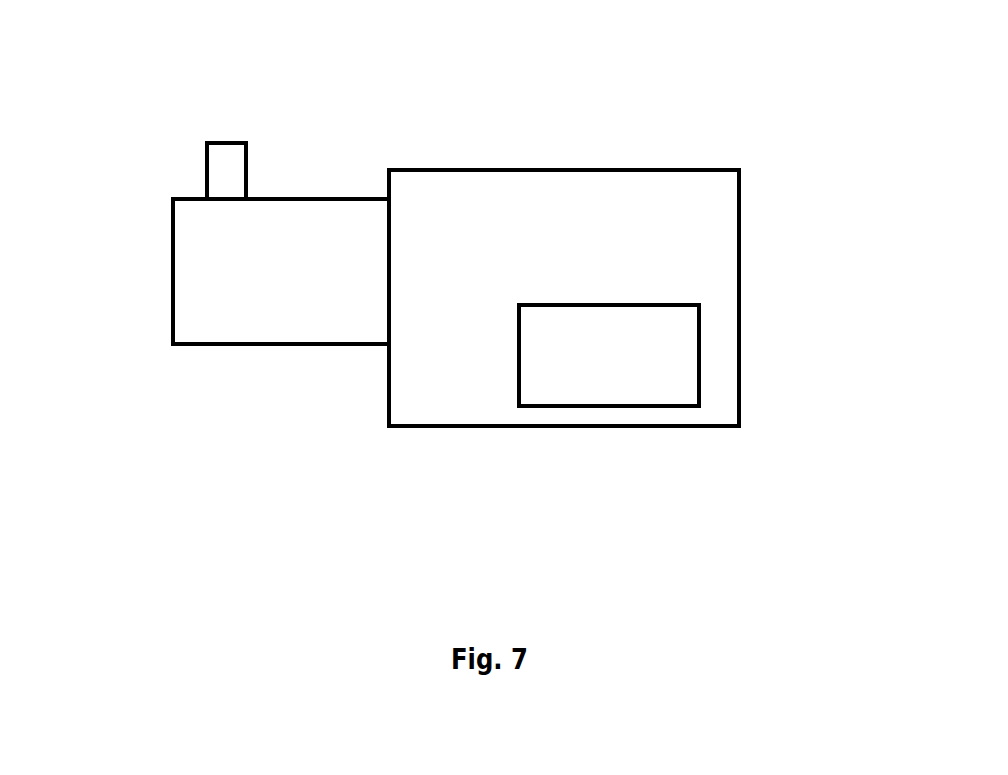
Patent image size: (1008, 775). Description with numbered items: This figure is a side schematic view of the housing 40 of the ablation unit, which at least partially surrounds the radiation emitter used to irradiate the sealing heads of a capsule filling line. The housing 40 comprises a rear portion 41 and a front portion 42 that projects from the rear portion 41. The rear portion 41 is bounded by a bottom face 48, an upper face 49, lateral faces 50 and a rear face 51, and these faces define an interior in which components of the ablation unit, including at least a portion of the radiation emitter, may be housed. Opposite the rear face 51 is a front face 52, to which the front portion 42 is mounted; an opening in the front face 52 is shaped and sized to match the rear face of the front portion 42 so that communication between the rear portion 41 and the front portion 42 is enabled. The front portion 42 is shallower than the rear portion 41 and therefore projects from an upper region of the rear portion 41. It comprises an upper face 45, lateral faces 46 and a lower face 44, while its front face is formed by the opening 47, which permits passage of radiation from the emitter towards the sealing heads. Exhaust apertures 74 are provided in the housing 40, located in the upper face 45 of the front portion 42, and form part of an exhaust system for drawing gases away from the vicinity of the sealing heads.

The housing 40 is at (652, 118).
The rear portion 41 is at (448, 457).
The front portion 42 is at (139, 350).
The lower face 44 is at (275, 343).
The upper face 45 is at (344, 196).
The lateral faces 46 is at (196, 317).
The opening 47 is at (148, 231).
The bottom face 48 is at (572, 425).
The upper face 49 is at (517, 167).
The lateral faces 50 is at (688, 217).
The rear face 51 is at (740, 220).
The front face 52 is at (387, 388).
The exhaust apertures 74 is at (233, 156).